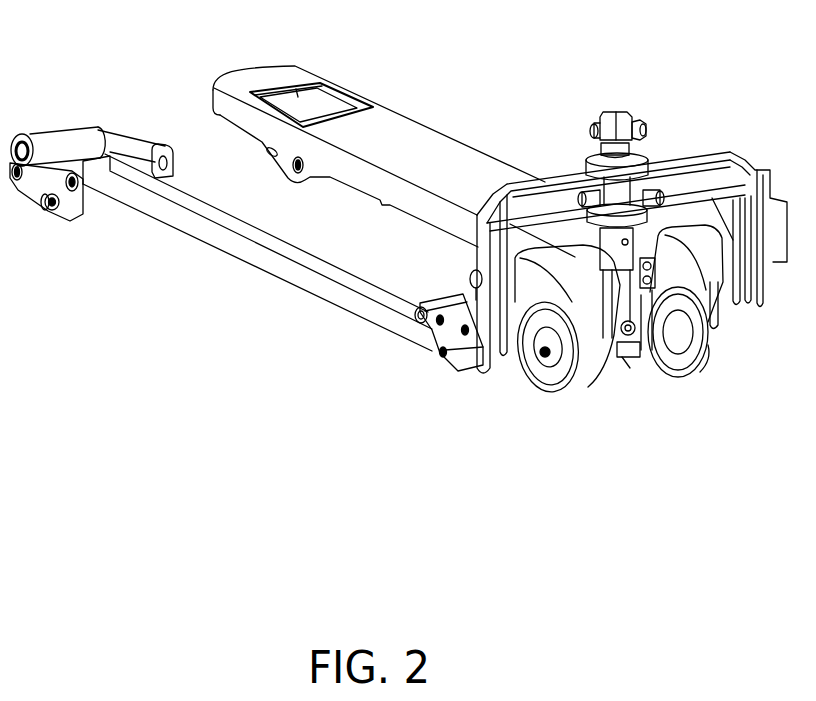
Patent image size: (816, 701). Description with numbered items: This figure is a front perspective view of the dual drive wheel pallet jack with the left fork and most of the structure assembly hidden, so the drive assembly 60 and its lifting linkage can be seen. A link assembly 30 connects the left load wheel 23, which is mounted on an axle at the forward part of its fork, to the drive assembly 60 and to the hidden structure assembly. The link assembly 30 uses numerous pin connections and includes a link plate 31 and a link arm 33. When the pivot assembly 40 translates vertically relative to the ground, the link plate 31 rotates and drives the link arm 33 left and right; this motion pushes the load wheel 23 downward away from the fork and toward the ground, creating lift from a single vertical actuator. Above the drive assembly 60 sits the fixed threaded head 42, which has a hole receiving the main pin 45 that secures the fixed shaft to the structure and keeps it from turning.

The left load wheel 23 is at (63, 137).
The link assembly 30 is at (405, 338).
The link plate 31 is at (489, 378).
The link arm 33 is at (260, 265).
The pivot assembly 40 is at (718, 148).
The fixed threaded head 42 is at (602, 113).
The main pin 45 is at (645, 117).
The drive assembly 60 is at (627, 370).